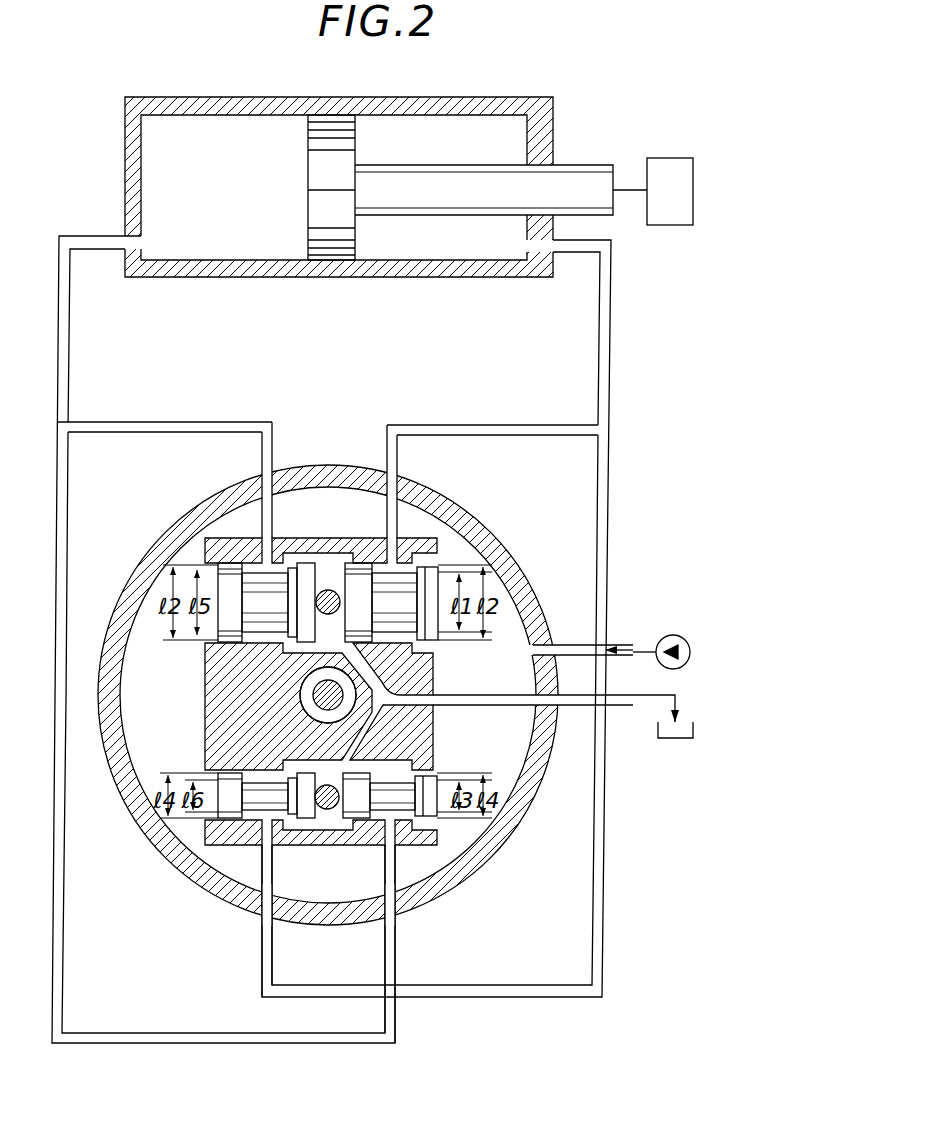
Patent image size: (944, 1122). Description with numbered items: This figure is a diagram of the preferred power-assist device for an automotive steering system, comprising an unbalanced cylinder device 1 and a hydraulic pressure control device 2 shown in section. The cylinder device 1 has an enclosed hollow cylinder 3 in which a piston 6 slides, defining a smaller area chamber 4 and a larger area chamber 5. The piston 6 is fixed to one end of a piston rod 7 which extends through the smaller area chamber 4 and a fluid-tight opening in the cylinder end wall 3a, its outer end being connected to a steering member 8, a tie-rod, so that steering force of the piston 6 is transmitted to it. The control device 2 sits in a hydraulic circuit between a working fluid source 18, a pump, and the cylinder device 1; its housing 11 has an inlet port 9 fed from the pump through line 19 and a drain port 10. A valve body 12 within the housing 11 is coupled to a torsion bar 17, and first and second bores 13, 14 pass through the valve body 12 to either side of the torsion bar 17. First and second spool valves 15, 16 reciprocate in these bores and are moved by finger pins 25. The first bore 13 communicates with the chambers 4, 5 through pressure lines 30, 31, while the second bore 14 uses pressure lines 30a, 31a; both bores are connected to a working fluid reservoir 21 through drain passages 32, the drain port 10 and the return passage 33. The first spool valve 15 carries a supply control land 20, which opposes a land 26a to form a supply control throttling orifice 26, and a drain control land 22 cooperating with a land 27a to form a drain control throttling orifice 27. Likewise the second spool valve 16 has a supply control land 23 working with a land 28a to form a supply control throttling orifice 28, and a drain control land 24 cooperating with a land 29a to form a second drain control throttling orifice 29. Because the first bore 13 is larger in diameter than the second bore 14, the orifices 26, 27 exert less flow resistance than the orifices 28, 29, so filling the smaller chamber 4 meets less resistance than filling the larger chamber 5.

The unbalanced cylinder device 1 is at (531, 92).
The hydraulic pressure control device 2 is at (553, 556).
The cylinder 3 is at (250, 97).
The cylinder end wall 3a is at (548, 127).
The smaller area chamber 4 is at (427, 149).
The larger area chamber 5 is at (212, 202).
The piston 6 is at (308, 158).
The piston rod 7 is at (590, 165).
The steering member 8 is at (676, 158).
The inlet port 9 is at (552, 643).
The drain port 10 is at (560, 700).
The housing 11 is at (163, 537).
The valve body 12 is at (318, 706).
The first bore 13 is at (344, 504).
The second bore 14 is at (310, 881).
The first spool valve 15 is at (328, 533).
The second spool valve 16 is at (327, 804).
The torsion bar 17 is at (312, 700).
The working fluid source 18 is at (681, 637).
The pump line 19 is at (612, 645).
The supply control land 20 is at (420, 598).
The working fluid reservoir 21 is at (694, 723).
The drain control land 22 is at (288, 706).
The supply control land 23 is at (420, 797).
The drain control land 24 is at (305, 777).
The finger pins 25 is at (328, 590).
The supply control throttling orifice 26 is at (443, 563).
The land 26a is at (388, 545).
The drain control throttling orifice 27 is at (293, 556).
The land 27a is at (258, 558).
The supply control throttling orifice 28 is at (435, 762).
The land 28a is at (435, 722).
The drain control throttling orifice 29 is at (280, 808).
The land 29a is at (240, 776).
The pressure line 30 is at (500, 425).
The pressure line 30a is at (605, 915).
The pressure line 31 is at (72, 358).
The pressure line 31a is at (67, 938).
The drain passage 32 is at (435, 672).
The return passage 33 is at (625, 708).